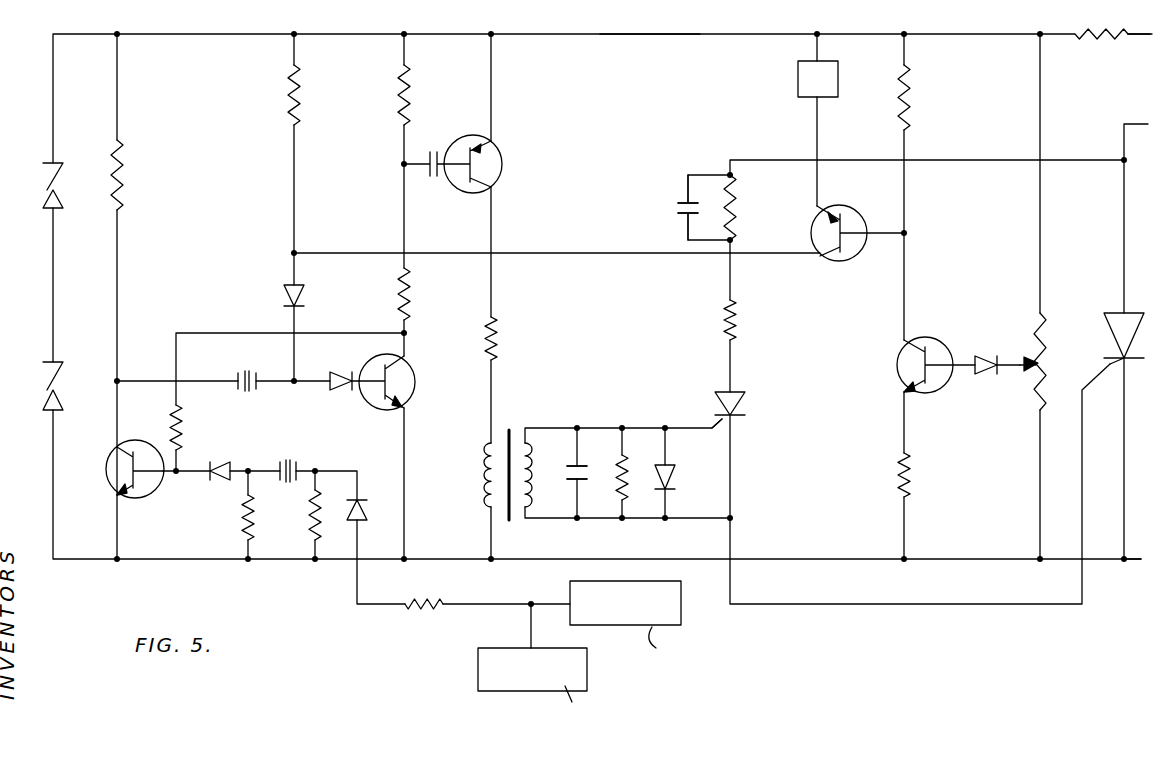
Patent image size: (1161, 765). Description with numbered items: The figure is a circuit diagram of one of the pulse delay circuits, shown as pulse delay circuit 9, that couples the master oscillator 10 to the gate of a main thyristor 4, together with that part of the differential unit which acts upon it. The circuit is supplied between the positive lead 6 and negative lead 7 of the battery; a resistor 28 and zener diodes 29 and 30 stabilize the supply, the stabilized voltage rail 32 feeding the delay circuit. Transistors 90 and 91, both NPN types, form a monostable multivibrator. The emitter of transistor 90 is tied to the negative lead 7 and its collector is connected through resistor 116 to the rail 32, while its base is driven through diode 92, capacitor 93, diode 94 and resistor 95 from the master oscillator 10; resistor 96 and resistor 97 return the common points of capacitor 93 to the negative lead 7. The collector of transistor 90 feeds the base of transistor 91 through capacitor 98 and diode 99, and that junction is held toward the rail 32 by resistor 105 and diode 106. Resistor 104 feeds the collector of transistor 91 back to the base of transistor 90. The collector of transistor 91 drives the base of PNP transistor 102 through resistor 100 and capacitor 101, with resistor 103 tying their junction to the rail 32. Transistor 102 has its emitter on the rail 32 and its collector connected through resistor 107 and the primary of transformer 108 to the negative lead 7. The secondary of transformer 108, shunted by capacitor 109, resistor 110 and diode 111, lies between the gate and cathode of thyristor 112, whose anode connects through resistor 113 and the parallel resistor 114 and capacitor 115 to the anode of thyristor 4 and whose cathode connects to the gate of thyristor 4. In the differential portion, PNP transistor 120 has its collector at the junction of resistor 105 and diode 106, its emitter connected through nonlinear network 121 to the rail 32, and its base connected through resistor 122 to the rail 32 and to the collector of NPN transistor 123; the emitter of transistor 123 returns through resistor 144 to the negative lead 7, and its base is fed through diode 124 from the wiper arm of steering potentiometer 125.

The main thyristor 4 is at (1113, 313).
The positive lead 6 is at (1137, 38).
The negative lead 7 is at (1131, 558).
The pulse delay circuit 9 is at (695, 625).
The master oscillator 10 is at (578, 687).
The resistor 28 is at (1102, 45).
The zener diode 29 is at (58, 401).
The zener diode 30 is at (60, 196).
The stabilized voltage rail 32 is at (238, 32).
The transistor 90 is at (106, 464).
The transistor 91 is at (412, 390).
The diode 92 is at (221, 483).
The capacitor 93 is at (289, 460).
The diode 94 is at (360, 498).
The resistor 95 is at (424, 589).
The resistor 96 is at (310, 526).
The resistor 97 is at (242, 526).
The capacitor 98 is at (236, 380).
The diode 99 is at (337, 394).
The resistor 100 is at (398, 292).
The capacitor 101 is at (437, 184).
The PNP transistor 102 is at (488, 153).
The resistor 103 is at (400, 82).
The resistor 104 is at (181, 441).
The resistor 105 is at (290, 82).
The diode 106 is at (283, 295).
The resistor 107 is at (500, 341).
The transformer 108 is at (530, 458).
The capacitor 109 is at (565, 482).
The resistor 110 is at (614, 452).
The diode 111 is at (674, 480).
The thyristor 112 is at (744, 400).
The resistor 113 is at (741, 314).
The resistor 114 is at (741, 208).
The capacitor 115 is at (682, 206).
The resistor 116 is at (124, 188).
The transistor 120 is at (858, 253).
The nonlinear network 121 is at (820, 79).
The resistor 122 is at (912, 107).
The NPN transistor 123 is at (936, 344).
The diode 124 is at (996, 383).
The steering potentiometer 125 is at (1043, 355).
The resistor 144 is at (909, 484).